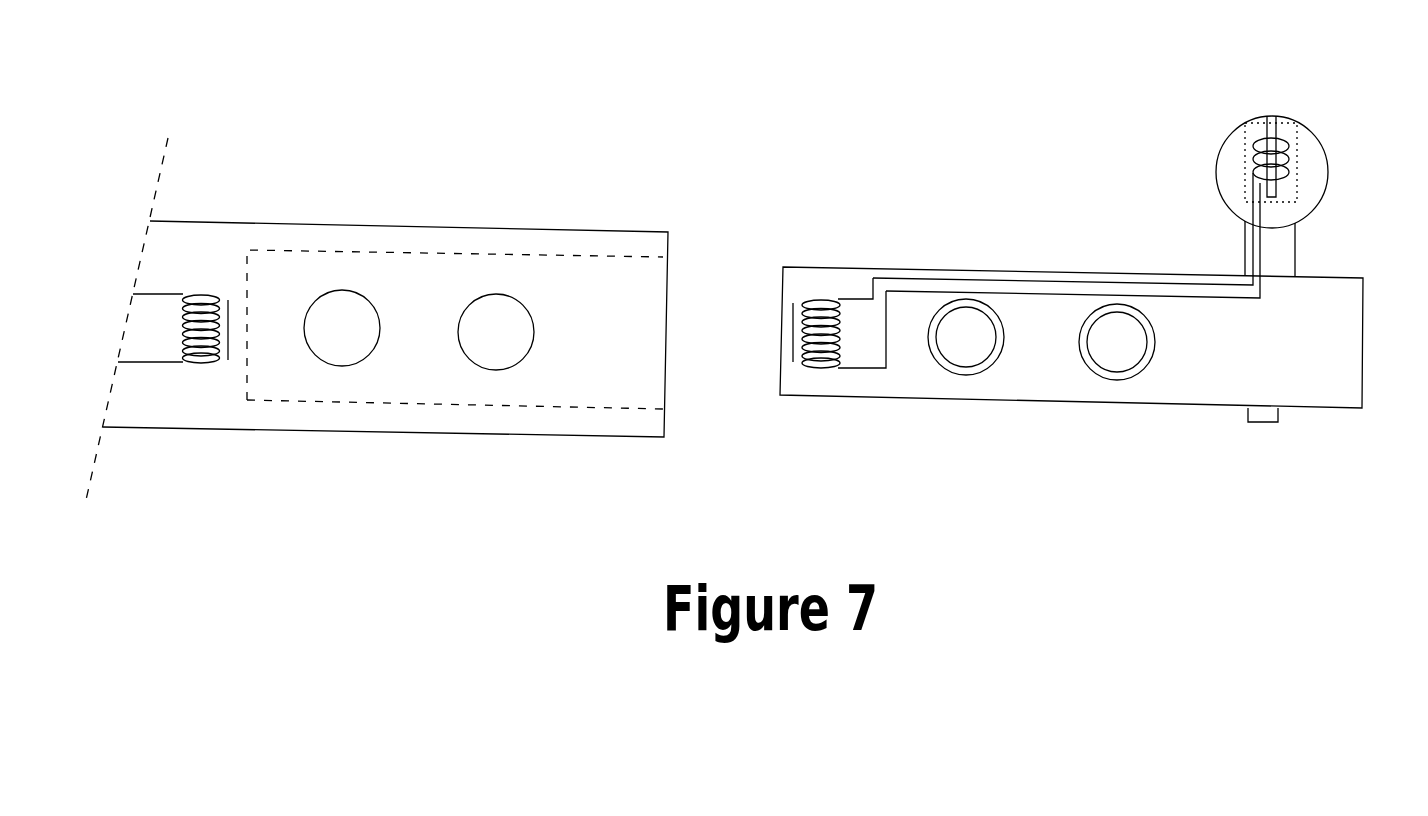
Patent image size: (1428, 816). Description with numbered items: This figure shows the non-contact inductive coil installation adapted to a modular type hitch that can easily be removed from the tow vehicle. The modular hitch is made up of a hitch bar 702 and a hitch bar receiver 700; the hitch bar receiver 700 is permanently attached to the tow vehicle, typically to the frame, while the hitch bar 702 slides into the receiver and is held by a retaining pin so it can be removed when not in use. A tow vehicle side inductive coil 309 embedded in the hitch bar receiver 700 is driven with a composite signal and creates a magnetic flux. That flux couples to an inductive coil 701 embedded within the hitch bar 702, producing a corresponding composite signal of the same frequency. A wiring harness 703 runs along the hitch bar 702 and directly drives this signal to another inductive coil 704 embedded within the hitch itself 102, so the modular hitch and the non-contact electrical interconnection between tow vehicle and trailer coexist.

The hitch bar receiver 700 is at (447, 225).
The tow vehicle side inductive coil 309 is at (212, 363).
The hitch bar 702 is at (795, 267).
The wiring harness 703 is at (1043, 279).
The inductive coil 701 is at (823, 368).
The hitch 102 is at (1218, 158).
The inductive coil 704 is at (1298, 125).